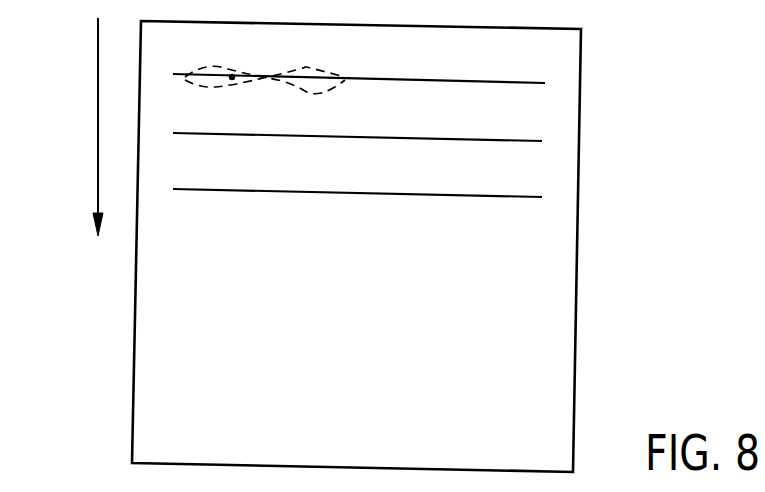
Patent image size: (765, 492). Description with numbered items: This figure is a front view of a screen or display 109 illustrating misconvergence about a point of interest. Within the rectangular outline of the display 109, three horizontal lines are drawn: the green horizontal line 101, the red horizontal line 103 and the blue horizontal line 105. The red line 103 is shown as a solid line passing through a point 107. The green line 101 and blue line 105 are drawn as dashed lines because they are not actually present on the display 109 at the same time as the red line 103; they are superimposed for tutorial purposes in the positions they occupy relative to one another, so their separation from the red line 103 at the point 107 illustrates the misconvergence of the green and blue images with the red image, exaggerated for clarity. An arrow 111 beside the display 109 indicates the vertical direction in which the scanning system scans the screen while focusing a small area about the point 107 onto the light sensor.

The green horizontal line 101 is at (233, 65).
The red horizontal line 103 is at (216, 78).
The blue horizontal line 105 is at (218, 88).
The point 107 is at (230, 75).
The screen or display 109 is at (581, 115).
The arrow 111 is at (98, 108).